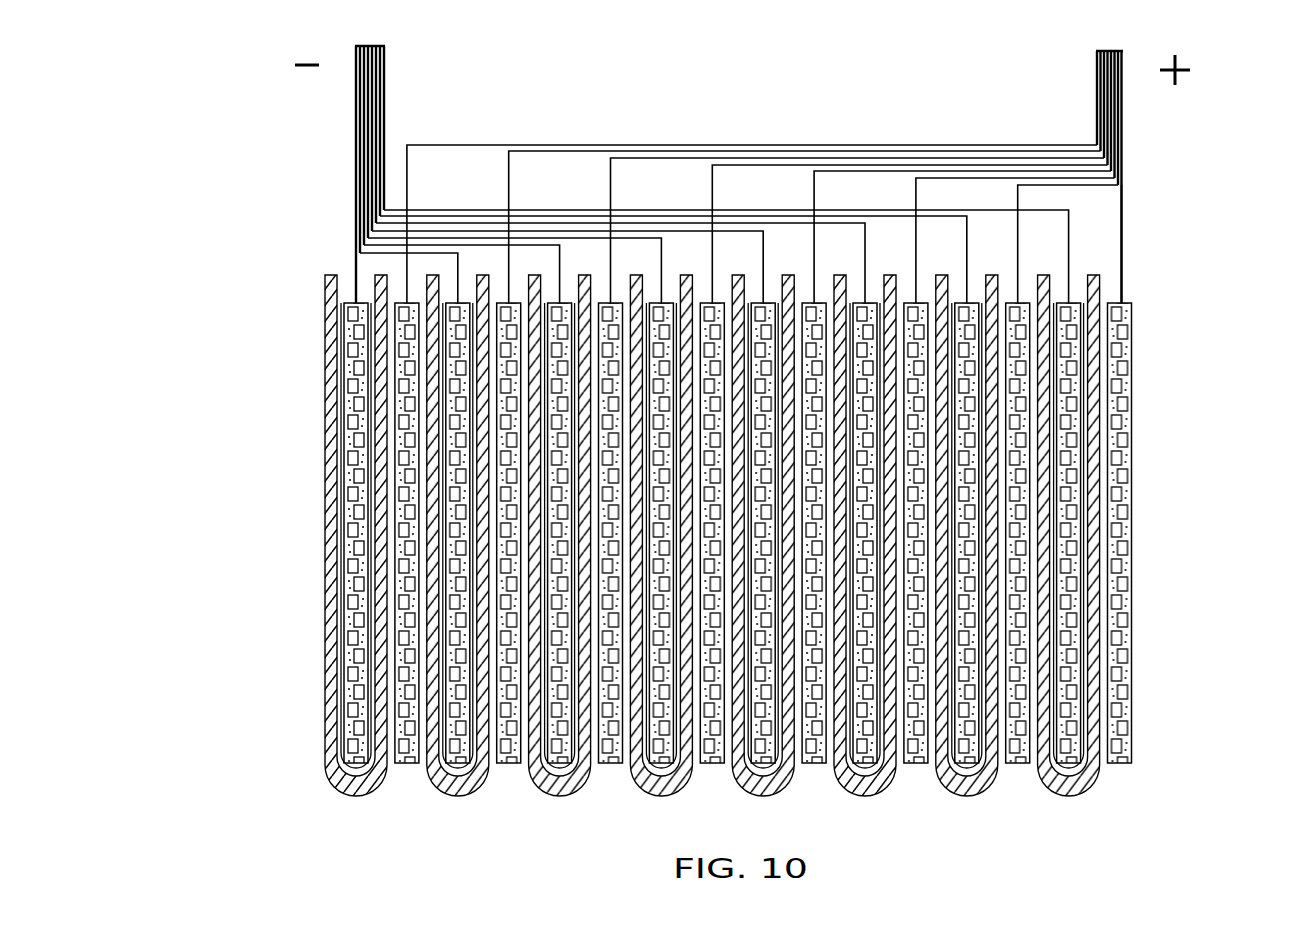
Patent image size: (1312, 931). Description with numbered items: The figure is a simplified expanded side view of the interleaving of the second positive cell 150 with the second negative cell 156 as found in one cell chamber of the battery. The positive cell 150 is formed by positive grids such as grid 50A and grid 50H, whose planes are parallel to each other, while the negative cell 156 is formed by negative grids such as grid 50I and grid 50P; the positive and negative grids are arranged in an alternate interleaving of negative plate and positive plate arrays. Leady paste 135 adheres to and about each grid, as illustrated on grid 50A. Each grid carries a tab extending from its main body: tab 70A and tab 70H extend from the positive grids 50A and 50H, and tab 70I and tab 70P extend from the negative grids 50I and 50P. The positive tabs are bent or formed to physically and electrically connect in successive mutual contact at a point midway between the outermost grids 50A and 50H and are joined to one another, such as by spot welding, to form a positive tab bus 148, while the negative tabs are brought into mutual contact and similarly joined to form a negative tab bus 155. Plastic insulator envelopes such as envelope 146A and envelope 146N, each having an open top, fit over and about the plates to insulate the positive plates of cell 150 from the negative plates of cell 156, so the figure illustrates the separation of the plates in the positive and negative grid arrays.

The negative bus bar 155 is at (378, 62).
The positive bus bar 148 is at (1088, 63).
The second negative cell 156 is at (226, 118).
The second positive cell 150 is at (1206, 120).
The tab 70P is at (348, 100).
The tab 70I is at (378, 101).
The tab 70H is at (399, 177).
The tab 70A is at (1118, 100).
The grid 50P is at (342, 405).
The grid 50A is at (385, 442).
The grid 50I is at (1062, 386).
The grid 50H is at (1113, 432).
The plastic insulator envelope 146N is at (318, 561).
The plastic insulator envelope 146A is at (1078, 768).
The leady paste 135 is at (335, 667).